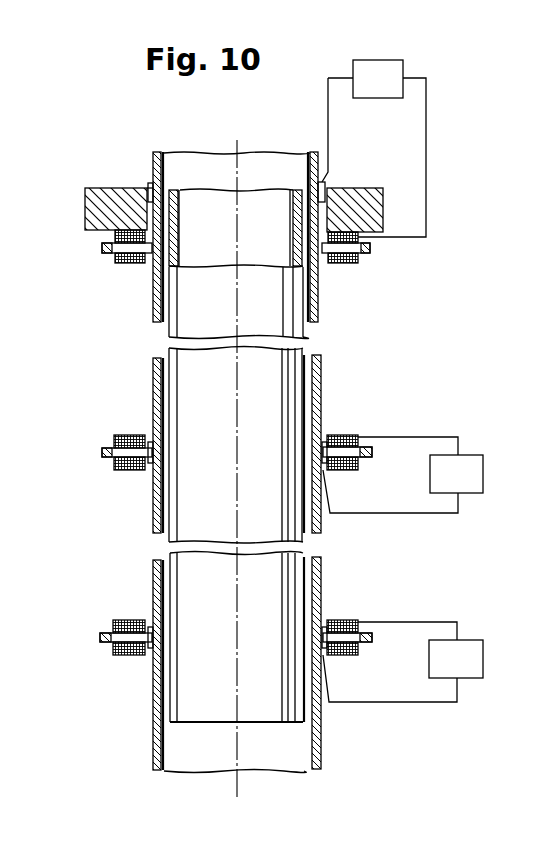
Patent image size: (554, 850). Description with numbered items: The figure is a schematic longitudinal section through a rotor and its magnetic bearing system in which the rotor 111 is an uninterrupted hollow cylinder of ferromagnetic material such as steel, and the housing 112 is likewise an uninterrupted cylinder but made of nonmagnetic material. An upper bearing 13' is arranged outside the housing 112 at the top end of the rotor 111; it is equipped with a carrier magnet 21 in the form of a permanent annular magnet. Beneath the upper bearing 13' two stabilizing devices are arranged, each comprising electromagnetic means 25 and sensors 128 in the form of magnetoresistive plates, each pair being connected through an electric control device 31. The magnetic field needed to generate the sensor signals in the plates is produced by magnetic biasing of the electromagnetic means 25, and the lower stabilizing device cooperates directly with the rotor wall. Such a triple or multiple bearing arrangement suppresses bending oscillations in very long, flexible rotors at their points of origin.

The upper bearing 13' is at (358, 130).
The carrier magnet 21 is at (100, 207).
The electromagnetic means 25 is at (100, 258).
The electric control device 31 is at (387, 70).
The rotor 111 is at (185, 302).
The housing 112 is at (160, 737).
The sensors 128 is at (148, 183).